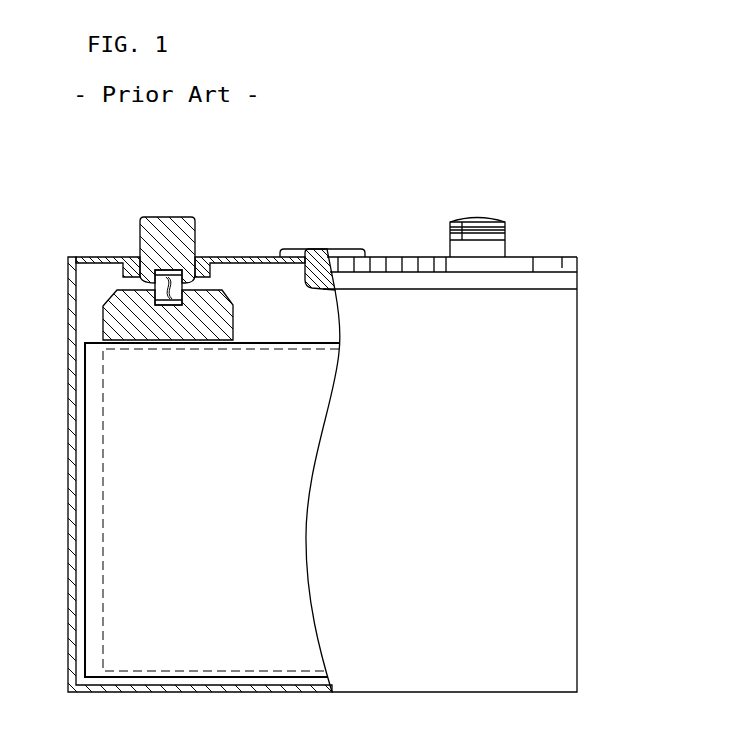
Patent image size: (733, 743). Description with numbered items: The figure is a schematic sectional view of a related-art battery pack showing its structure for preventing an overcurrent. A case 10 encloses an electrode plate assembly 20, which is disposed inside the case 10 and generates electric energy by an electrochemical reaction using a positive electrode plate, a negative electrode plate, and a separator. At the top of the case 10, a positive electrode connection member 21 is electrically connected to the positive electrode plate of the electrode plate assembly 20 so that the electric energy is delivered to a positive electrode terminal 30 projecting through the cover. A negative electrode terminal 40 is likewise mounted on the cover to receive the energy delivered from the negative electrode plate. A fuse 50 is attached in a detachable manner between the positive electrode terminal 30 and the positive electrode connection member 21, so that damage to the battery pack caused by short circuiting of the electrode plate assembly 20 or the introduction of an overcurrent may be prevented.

The case 10 is at (68, 687).
The electrode plate assembly 20 is at (118, 507).
The positive electrode connection member 21 is at (103, 322).
The positive electrode terminal 30 is at (173, 217).
The negative electrode terminal 40 is at (478, 217).
The fuse 50 is at (156, 290).